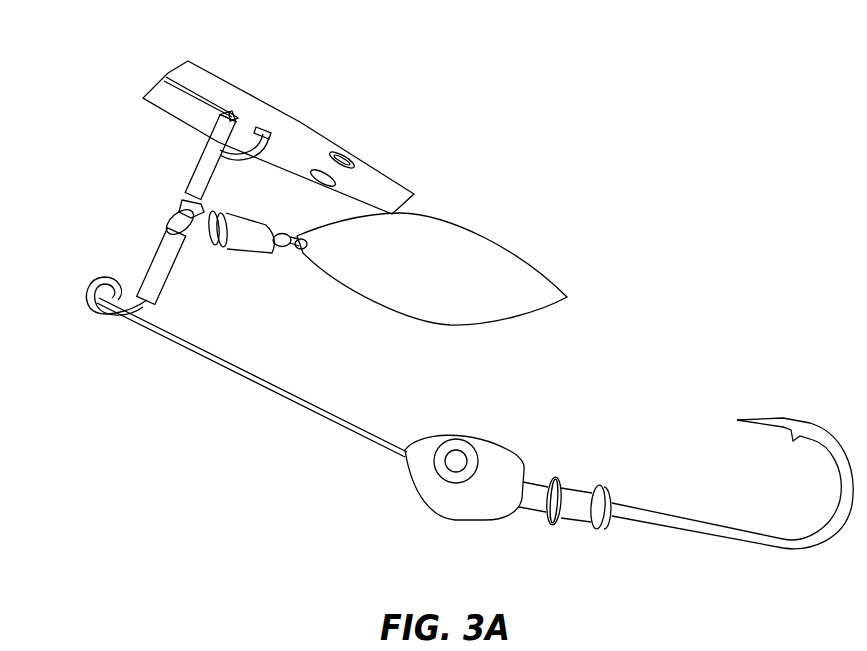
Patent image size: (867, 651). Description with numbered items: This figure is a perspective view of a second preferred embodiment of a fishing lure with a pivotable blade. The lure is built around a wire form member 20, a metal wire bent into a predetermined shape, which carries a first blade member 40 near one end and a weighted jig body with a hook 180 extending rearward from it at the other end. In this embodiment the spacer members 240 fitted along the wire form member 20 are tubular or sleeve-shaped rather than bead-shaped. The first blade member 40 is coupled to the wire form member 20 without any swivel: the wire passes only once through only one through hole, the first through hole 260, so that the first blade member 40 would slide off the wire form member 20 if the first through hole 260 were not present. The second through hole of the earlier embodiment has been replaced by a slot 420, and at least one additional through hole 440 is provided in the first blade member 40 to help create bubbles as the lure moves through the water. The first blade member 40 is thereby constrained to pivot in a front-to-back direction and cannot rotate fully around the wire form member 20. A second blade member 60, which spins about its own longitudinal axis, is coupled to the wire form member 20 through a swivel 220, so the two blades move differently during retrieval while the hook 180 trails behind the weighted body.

The wire form member 20 is at (320, 415).
The first blade member 40 is at (255, 107).
The second blade member 60 is at (465, 245).
The hook 180 is at (758, 425).
The swivel 220 is at (237, 238).
The spacer members 240 is at (197, 173).
The first through hole 260 is at (267, 138).
The slot 420 is at (183, 87).
The additional through hole 440 is at (337, 158).